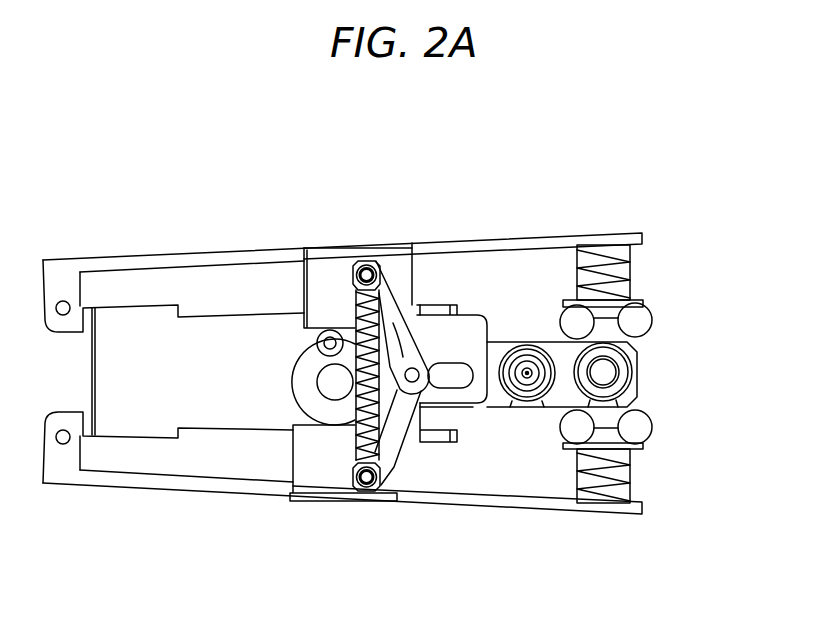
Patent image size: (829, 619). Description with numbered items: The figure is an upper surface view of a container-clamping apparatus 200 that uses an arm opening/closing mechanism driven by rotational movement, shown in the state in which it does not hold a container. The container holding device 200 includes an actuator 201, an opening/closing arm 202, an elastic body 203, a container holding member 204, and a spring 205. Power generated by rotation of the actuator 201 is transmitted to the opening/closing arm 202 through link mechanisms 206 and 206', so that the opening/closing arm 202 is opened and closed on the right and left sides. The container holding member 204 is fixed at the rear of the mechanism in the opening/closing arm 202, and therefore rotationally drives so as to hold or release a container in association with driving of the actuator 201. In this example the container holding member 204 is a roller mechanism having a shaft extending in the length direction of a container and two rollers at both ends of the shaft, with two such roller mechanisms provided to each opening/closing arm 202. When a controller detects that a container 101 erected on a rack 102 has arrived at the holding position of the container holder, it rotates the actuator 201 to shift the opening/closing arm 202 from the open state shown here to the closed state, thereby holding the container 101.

The container-clamping apparatus 200 is at (657, 587).
The opening/closing arm 202 is at (500, 237).
The elastic body 203 is at (603, 245).
The container holding member 204 is at (648, 303).
The container 101 is at (640, 360).
The rack 102 is at (640, 382).
The actuator 201 is at (310, 397).
The spring 205 is at (352, 495).
The link mechanism 206 is at (255, 362).
The link mechanism 206' is at (321, 226).